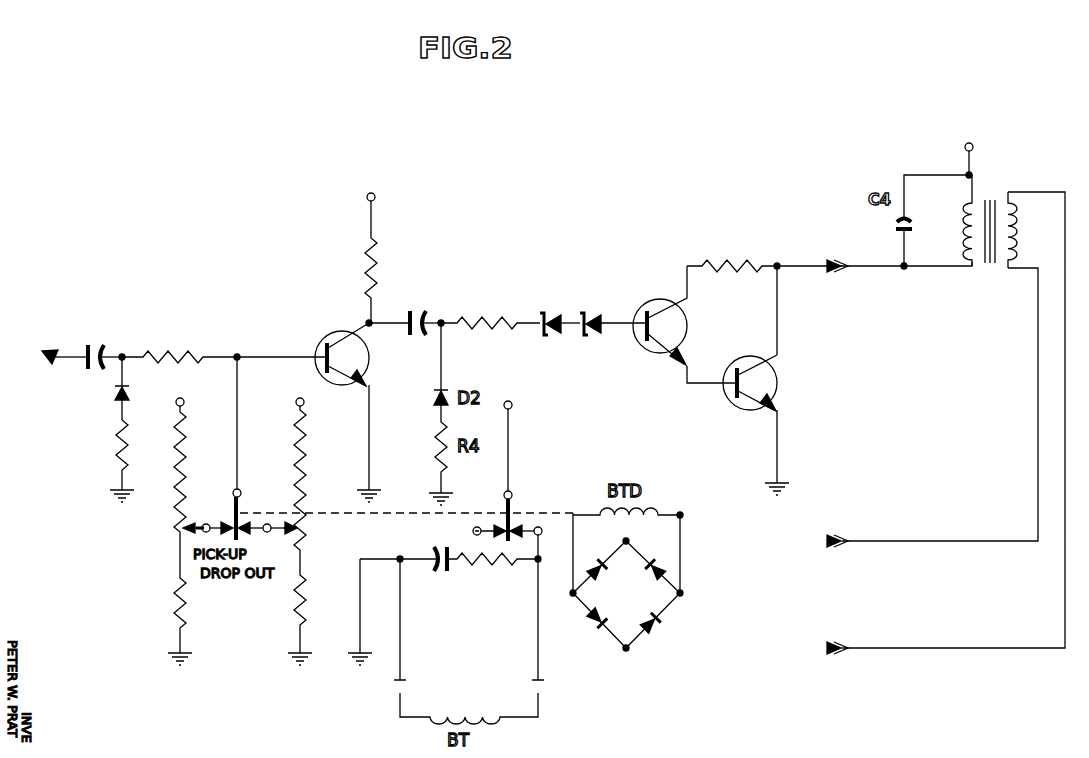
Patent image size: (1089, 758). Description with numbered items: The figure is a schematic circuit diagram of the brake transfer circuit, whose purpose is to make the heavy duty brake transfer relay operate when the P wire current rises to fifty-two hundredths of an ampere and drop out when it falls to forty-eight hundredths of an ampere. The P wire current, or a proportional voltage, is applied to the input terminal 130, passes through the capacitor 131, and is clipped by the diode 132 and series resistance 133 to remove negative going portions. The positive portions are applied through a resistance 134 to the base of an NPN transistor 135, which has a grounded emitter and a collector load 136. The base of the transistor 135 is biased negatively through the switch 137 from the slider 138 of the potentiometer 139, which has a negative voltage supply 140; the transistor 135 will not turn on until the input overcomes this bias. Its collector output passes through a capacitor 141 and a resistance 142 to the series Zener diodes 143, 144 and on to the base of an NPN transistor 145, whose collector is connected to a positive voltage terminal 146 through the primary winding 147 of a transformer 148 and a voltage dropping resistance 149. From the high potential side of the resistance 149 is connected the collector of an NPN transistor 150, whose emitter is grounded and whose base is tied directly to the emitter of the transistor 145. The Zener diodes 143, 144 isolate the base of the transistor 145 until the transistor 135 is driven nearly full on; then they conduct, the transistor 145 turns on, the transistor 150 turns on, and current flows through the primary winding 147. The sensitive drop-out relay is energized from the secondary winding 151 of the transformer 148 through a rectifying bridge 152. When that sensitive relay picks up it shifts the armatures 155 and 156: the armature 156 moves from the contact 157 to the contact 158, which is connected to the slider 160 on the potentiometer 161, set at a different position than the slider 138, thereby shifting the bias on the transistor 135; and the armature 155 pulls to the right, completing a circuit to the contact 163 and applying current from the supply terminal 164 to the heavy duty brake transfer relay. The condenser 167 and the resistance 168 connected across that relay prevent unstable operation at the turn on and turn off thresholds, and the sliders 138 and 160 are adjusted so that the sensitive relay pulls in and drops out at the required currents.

The input terminal 130 is at (49, 357).
The capacitor 131 is at (102, 352).
The diode 132 is at (116, 392).
The series resistance 133 is at (116, 452).
The resistance 134 is at (183, 357).
The NPN transistor 135 is at (370, 362).
The collector load 136 is at (370, 264).
The switch 137 is at (232, 493).
The slider 138 is at (190, 532).
The potentiometer 139 is at (176, 512).
The negative voltage supply 140 is at (184, 406).
The capacitor 141 is at (425, 320).
The resistance 142 is at (478, 322).
The Zener diode 143 is at (548, 316).
The Zener diode 144 is at (598, 316).
The NPN transistor 145 is at (692, 336).
The positive voltage terminal 146 is at (965, 148).
The primary winding 147 is at (966, 252).
The transformer 148 is at (1002, 305).
The voltage dropping resistance 149 is at (738, 264).
The NPN transistor 150 is at (780, 388).
The secondary winding 151 is at (1018, 228).
The rectifying bridge 152 is at (666, 590).
The armature 155 is at (512, 496).
The armature 156 is at (241, 497).
The contact 157 is at (212, 516).
The contact 158 is at (245, 518).
The slider 160 is at (303, 528).
The potentiometer 161 is at (296, 442).
The contact 163 is at (514, 522).
The supply terminal 164 is at (512, 410).
The condenser 167 is at (438, 572).
The resistance 168 is at (484, 570).